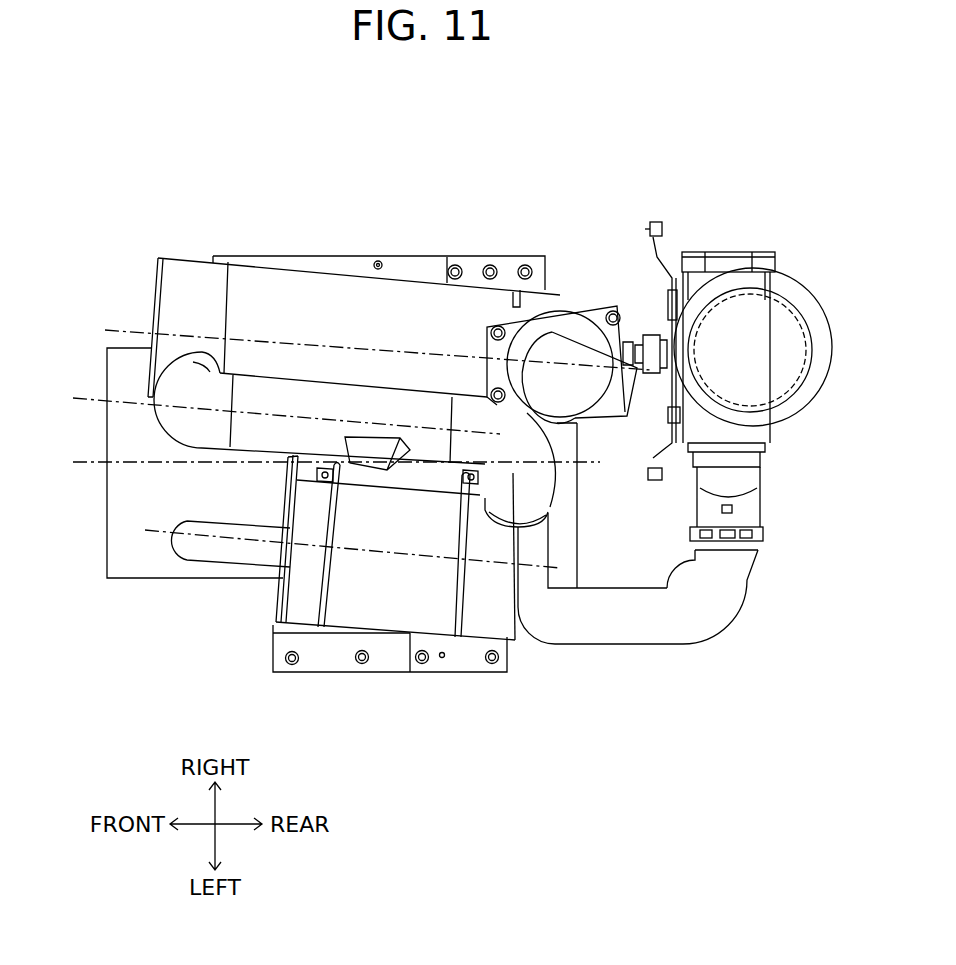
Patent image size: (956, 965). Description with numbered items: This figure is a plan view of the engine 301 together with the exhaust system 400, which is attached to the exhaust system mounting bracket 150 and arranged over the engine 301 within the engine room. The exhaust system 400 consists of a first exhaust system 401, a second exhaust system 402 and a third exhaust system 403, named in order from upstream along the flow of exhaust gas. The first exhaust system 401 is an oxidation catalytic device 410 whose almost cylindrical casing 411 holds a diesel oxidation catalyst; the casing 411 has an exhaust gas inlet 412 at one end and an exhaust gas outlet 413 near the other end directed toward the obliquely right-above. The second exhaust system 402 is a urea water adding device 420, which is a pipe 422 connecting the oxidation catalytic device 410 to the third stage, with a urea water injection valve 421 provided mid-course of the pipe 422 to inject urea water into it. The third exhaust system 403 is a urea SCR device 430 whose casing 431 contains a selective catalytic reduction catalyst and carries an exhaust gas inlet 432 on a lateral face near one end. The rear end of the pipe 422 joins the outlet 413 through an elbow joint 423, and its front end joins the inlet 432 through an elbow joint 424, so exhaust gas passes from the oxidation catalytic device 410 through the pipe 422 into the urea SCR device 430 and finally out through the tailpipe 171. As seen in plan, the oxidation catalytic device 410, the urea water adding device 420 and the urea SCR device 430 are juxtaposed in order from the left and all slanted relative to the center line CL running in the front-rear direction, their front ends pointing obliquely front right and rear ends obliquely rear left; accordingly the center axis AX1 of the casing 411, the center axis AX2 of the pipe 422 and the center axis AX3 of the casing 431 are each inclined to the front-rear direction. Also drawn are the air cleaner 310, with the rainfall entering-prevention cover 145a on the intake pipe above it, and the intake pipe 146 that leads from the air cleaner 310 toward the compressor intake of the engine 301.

The exhaust system 400 is at (344, 128).
The third exhaust system 403 is at (354, 307).
The urea SCR device 430 is at (354, 307).
The casing 431 is at (415, 293).
The exhaust gas inlet 432 is at (188, 358).
The elbow joint 424 is at (196, 385).
The urea water injection valve 421 is at (371, 446).
The second exhaust system 402 is at (420, 390).
The urea water adding device 420 is at (513, 267).
The pipe 422 is at (433, 410).
The elbow joint 423 is at (547, 487).
The exhaust gas outlet 413 is at (525, 513).
The tailpipe 171 is at (553, 350).
The rainfall entering-prevention cover 145a is at (749, 345).
The air cleaner 310 is at (740, 339).
The intake pipe 146 is at (735, 600).
The first exhaust system 401 is at (343, 594).
The oxidation catalytic device 410 is at (343, 594).
The casing 411 is at (302, 604).
The exhaust gas inlet 412 is at (267, 556).
The exhaust system mounting bracket 150 is at (479, 683).
The engine 301 is at (125, 508).
The center axis AX1 is at (155, 536).
The center axis AX2 is at (85, 398).
The center axis AX3 is at (133, 326).
The center line CL is at (93, 462).